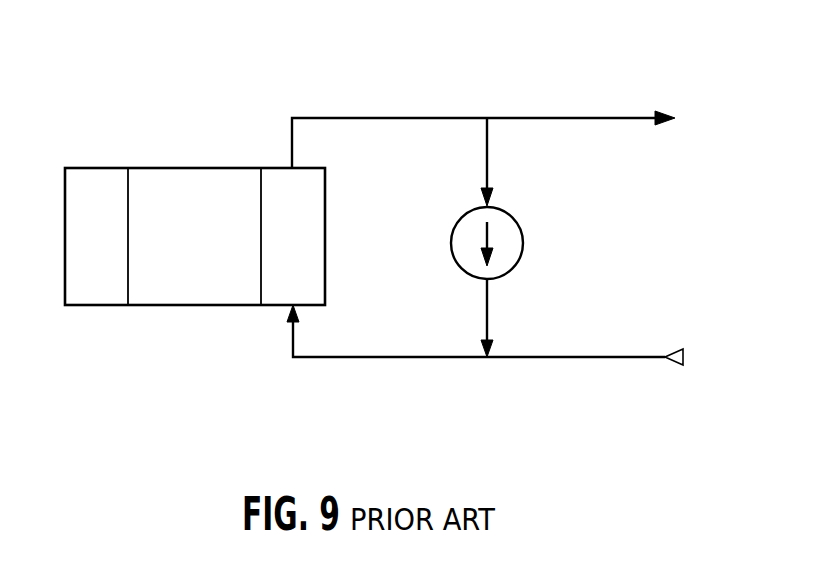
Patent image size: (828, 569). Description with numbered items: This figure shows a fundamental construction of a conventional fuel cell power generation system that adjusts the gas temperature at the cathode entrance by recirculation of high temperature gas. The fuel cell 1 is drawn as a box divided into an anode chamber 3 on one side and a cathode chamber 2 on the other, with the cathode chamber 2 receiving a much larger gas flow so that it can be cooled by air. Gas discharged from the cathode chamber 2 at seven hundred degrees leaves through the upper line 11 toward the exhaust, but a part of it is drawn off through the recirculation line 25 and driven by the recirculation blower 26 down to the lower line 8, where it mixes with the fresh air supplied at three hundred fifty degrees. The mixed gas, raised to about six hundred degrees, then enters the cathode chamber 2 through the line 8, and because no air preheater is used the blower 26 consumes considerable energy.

The fuel cell 1 is at (196, 163).
The cathode chamber 2 is at (278, 175).
The anode chamber 3 is at (78, 175).
The line 8 is at (420, 357).
The line 11 is at (541, 118).
The recirculation line 25 is at (488, 160).
The recirculation blower 26 is at (520, 230).